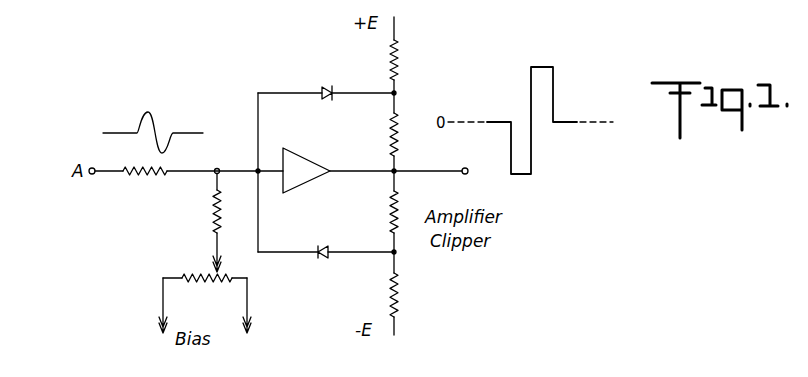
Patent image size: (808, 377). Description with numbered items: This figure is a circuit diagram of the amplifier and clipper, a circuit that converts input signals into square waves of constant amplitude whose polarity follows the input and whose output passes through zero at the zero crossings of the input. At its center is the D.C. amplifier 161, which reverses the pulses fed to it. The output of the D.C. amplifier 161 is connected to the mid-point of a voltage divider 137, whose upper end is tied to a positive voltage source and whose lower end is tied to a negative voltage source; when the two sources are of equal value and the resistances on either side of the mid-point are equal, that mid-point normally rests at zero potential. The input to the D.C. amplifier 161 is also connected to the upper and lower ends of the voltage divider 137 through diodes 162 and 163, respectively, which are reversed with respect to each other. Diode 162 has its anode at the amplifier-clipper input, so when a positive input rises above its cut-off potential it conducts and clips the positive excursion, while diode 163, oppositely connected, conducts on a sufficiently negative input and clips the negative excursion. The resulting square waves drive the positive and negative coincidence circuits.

The D.C. amplifier 161 is at (311, 136).
The diode 162 is at (327, 88).
The diode 163 is at (324, 257).
The voltage divider 137 is at (440, 160).